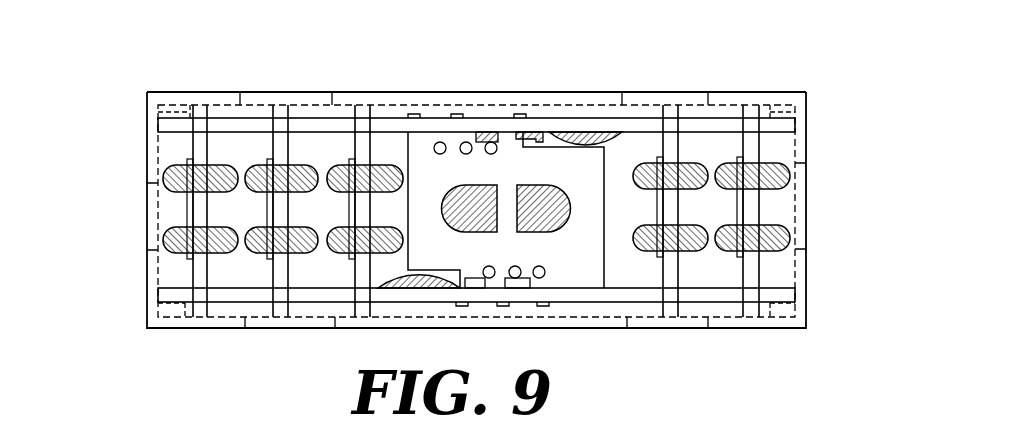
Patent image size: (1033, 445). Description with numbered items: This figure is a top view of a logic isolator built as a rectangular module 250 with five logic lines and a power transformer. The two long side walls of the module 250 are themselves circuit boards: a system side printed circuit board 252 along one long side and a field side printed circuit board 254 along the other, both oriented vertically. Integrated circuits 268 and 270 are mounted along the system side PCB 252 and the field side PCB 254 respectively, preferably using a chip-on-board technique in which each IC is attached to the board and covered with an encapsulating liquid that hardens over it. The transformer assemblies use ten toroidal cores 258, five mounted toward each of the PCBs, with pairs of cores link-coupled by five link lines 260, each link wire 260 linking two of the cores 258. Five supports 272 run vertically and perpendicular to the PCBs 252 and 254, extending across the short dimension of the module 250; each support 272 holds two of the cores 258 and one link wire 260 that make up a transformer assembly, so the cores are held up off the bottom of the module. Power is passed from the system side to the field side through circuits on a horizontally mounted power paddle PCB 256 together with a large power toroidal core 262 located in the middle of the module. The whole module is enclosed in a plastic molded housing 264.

The rectangular module 250 is at (852, 90).
The system side printed circuit board 252 is at (655, 302).
The field side printed circuit board 254 is at (623, 123).
The power paddle PCB 256 is at (450, 140).
The toroidal cores 258 is at (165, 178).
The link lines 260 is at (185, 210).
The power toroidal core 262 is at (531, 236).
The plastic molded housing 264 is at (752, 92).
The integrated circuit 268 is at (428, 289).
The integrated circuit 270 is at (584, 132).
The supports 272 is at (366, 146).